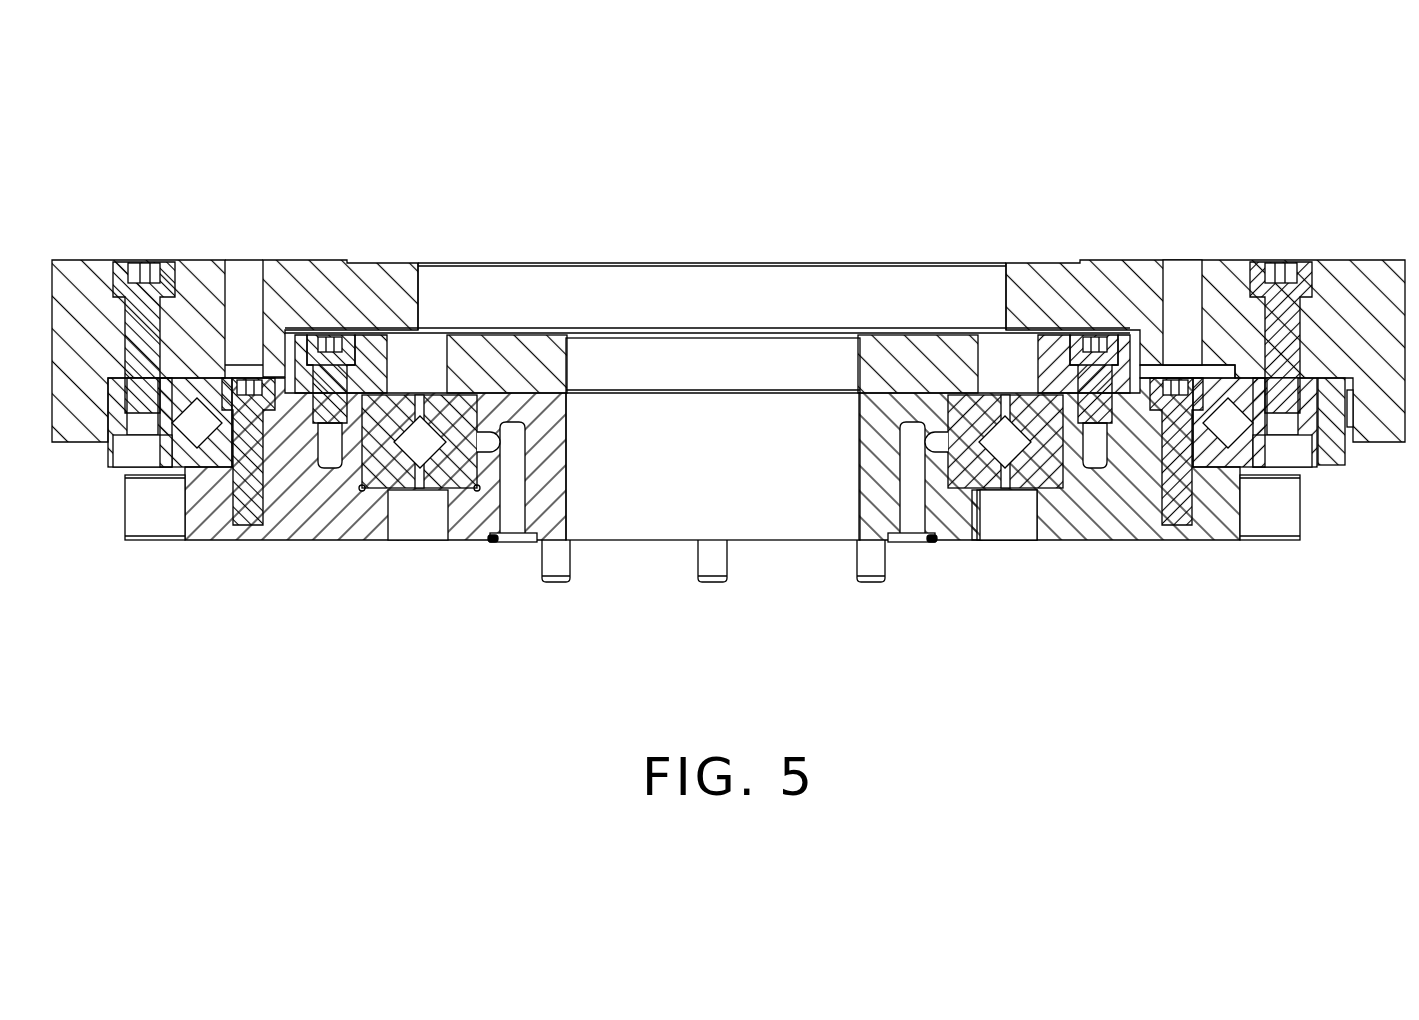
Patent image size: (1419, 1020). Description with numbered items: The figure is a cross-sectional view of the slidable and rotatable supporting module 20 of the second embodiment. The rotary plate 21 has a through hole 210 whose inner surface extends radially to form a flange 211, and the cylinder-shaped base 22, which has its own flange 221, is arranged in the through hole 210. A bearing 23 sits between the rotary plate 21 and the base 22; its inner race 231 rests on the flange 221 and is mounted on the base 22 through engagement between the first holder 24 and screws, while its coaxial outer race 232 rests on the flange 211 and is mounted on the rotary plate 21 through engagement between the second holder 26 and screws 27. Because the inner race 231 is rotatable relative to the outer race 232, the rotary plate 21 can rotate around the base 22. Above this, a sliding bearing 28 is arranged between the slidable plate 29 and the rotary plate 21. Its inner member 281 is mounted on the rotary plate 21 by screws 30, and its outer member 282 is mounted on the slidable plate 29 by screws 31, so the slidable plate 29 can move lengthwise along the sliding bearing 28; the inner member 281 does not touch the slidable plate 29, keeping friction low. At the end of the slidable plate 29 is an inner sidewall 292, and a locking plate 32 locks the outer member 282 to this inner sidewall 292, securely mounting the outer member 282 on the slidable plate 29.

The slidable and rotatable supporting module 20 is at (693, 104).
The rotary plate 21 is at (345, 487).
The flange 211 is at (370, 490).
The base 22 is at (1041, 520).
The flange 221 is at (977, 542).
The through hole 210 is at (1015, 522).
The bearing 23 is at (430, 532).
The inner race 231 is at (447, 467).
The outer race 232 is at (380, 493).
The first holder 24 is at (518, 367).
The second holder 26 is at (375, 330).
The screws 27 is at (323, 343).
The sliding bearing 28 is at (1209, 295).
The inner member 281 is at (1213, 390).
The outer member 282 is at (1245, 403).
The slidable plate 29 is at (80, 268).
The inner sidewall 292 is at (1362, 293).
The screws 30 is at (252, 533).
The screws 31 is at (153, 268).
The locking plate 32 is at (1337, 452).